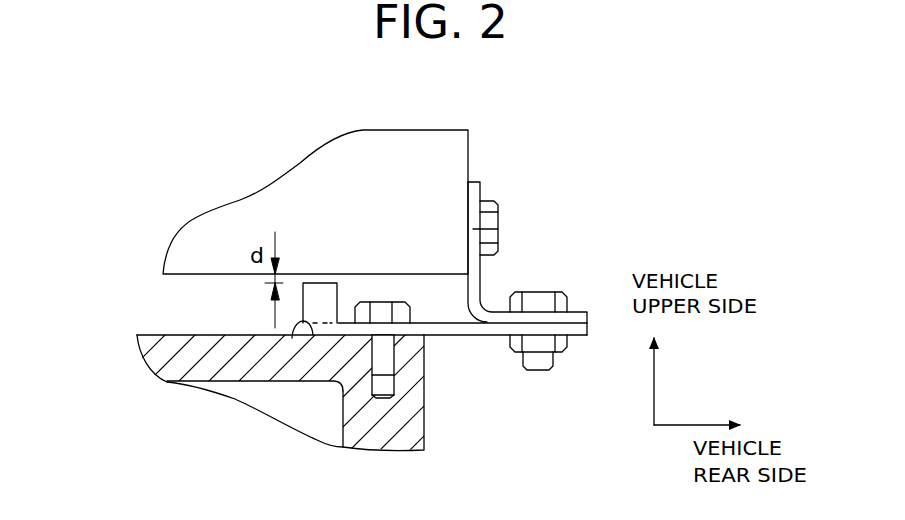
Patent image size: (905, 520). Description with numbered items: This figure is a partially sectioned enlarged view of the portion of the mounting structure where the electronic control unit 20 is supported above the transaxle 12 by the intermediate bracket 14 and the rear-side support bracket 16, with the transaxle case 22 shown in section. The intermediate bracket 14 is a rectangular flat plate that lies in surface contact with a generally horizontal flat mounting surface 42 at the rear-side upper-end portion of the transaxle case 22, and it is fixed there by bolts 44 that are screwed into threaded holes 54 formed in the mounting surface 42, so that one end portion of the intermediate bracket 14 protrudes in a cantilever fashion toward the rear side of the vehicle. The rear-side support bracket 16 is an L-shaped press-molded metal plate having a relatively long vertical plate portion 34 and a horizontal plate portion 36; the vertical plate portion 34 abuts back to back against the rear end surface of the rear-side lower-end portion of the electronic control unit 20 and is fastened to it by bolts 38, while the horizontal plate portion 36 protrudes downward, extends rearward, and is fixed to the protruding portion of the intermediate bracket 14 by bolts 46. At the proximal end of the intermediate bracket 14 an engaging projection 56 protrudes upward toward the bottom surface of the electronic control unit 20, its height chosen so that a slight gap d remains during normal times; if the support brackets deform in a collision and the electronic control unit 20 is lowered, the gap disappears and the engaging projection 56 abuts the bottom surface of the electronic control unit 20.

The transaxle 12 is at (225, 442).
The intermediate bracket 14 is at (438, 330).
The rear-side support bracket 16 is at (556, 238).
The electronic control unit 20 is at (401, 148).
The transaxle case 22 is at (383, 422).
The vertical plate portion 34 is at (498, 229).
The horizontal plate portion 36 is at (528, 312).
The bolt 38 is at (490, 208).
The mounting surface 42 is at (292, 338).
The bolt 44 is at (387, 312).
The bolt 46 is at (557, 292).
The threaded hole 54 is at (396, 387).
The engaging projection 56 is at (320, 293).